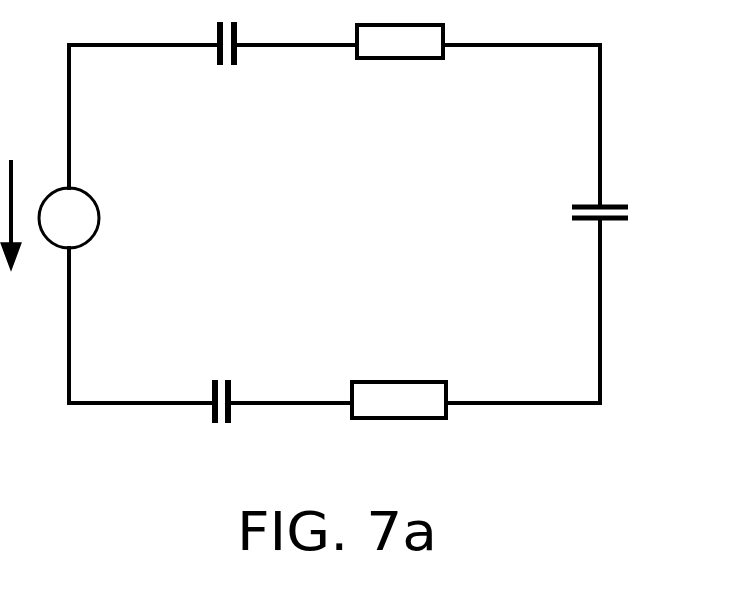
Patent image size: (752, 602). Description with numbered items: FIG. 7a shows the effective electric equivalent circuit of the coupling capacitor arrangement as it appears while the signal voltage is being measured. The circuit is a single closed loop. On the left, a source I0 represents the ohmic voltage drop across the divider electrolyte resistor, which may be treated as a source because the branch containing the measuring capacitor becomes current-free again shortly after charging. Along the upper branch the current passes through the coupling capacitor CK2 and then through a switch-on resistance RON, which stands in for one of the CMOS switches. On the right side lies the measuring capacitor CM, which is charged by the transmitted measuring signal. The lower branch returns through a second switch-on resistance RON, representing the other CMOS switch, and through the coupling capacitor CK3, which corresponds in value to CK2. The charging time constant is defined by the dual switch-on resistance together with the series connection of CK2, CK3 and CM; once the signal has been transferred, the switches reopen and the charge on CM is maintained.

The current source I0 is at (110, 215).
The coupling capacitor CK2 is at (238, 55).
The switch-on resistance RON is at (380, 380).
The measuring capacitor CM is at (606, 220).
The coupling capacitor CK3 is at (232, 410).